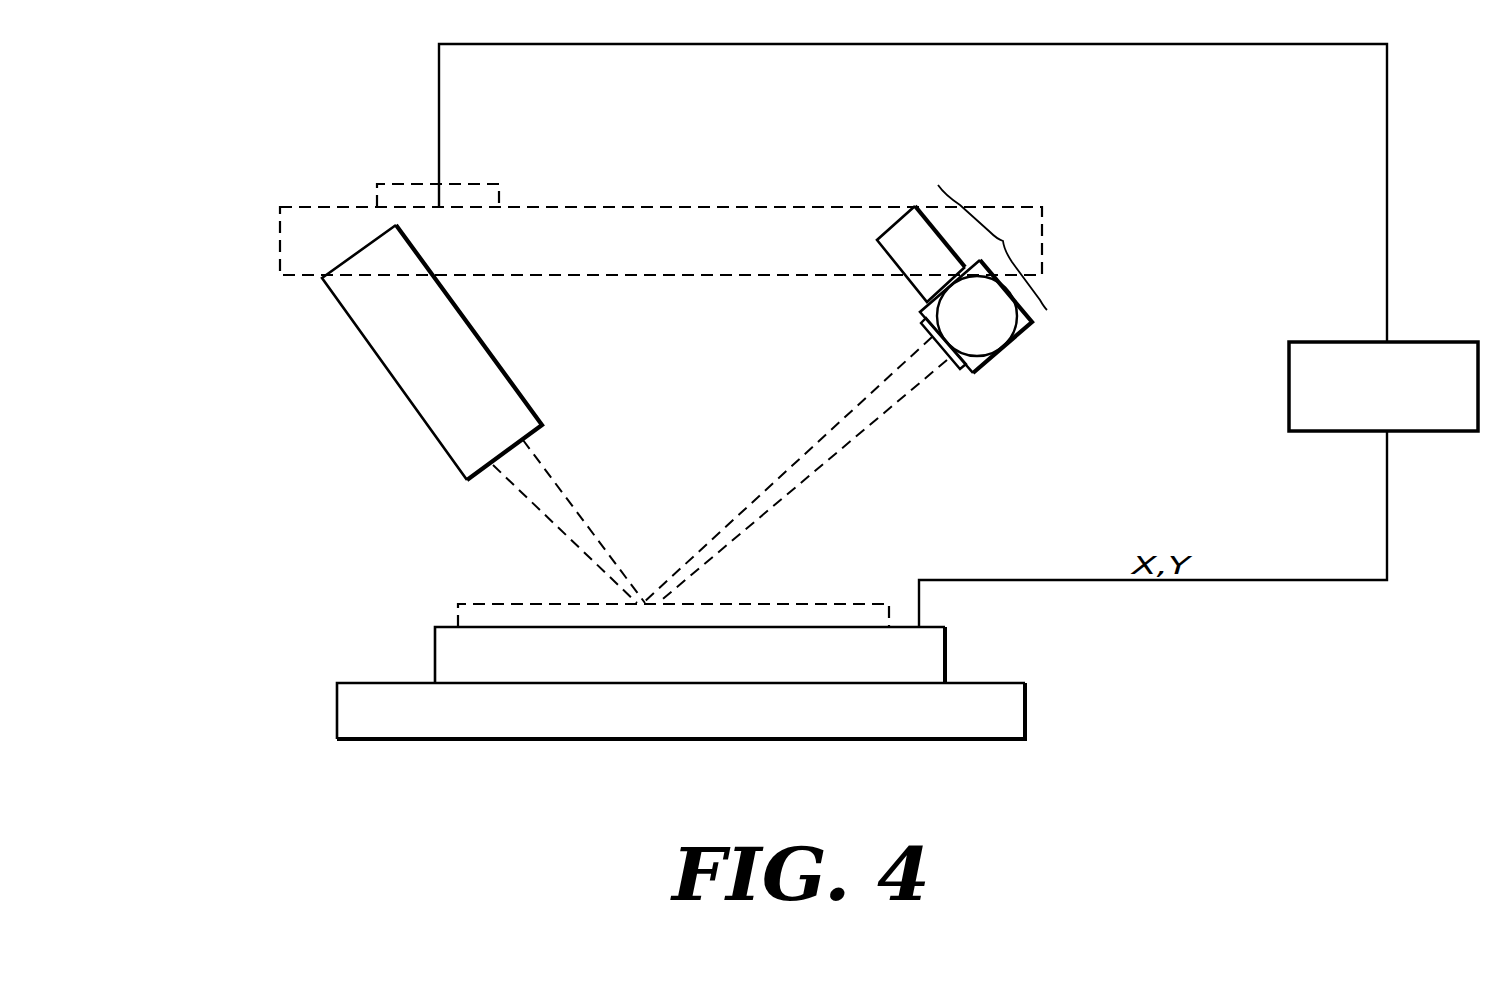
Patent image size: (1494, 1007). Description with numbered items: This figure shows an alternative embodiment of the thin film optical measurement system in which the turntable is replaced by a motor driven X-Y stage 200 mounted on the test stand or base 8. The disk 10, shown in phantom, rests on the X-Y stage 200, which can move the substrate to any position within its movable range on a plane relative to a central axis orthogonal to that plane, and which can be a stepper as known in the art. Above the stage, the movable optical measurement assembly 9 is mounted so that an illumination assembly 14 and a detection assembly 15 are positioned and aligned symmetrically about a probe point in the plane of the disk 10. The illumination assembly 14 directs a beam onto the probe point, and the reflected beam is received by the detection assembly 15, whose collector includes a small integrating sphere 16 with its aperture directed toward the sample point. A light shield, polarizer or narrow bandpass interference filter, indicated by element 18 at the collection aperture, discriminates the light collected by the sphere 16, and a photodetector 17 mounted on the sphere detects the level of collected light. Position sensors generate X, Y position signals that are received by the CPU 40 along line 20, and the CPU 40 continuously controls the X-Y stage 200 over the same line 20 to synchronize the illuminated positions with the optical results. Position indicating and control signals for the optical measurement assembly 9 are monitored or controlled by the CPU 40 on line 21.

The base 8 is at (958, 717).
The optical measurement assembly 9 is at (250, 263).
The disk 10 is at (505, 620).
The illumination assembly 14 is at (446, 492).
The detection assembly 15 is at (1003, 241).
The integrating sphere 16 is at (992, 332).
The photodetector 17 is at (923, 258).
The light shield, polarizer or filter element 18 is at (947, 360).
The line 20 is at (1053, 583).
The line 21 is at (1386, 159).
The CPU 40 is at (1401, 413).
The X-Y stage 200 is at (467, 647).